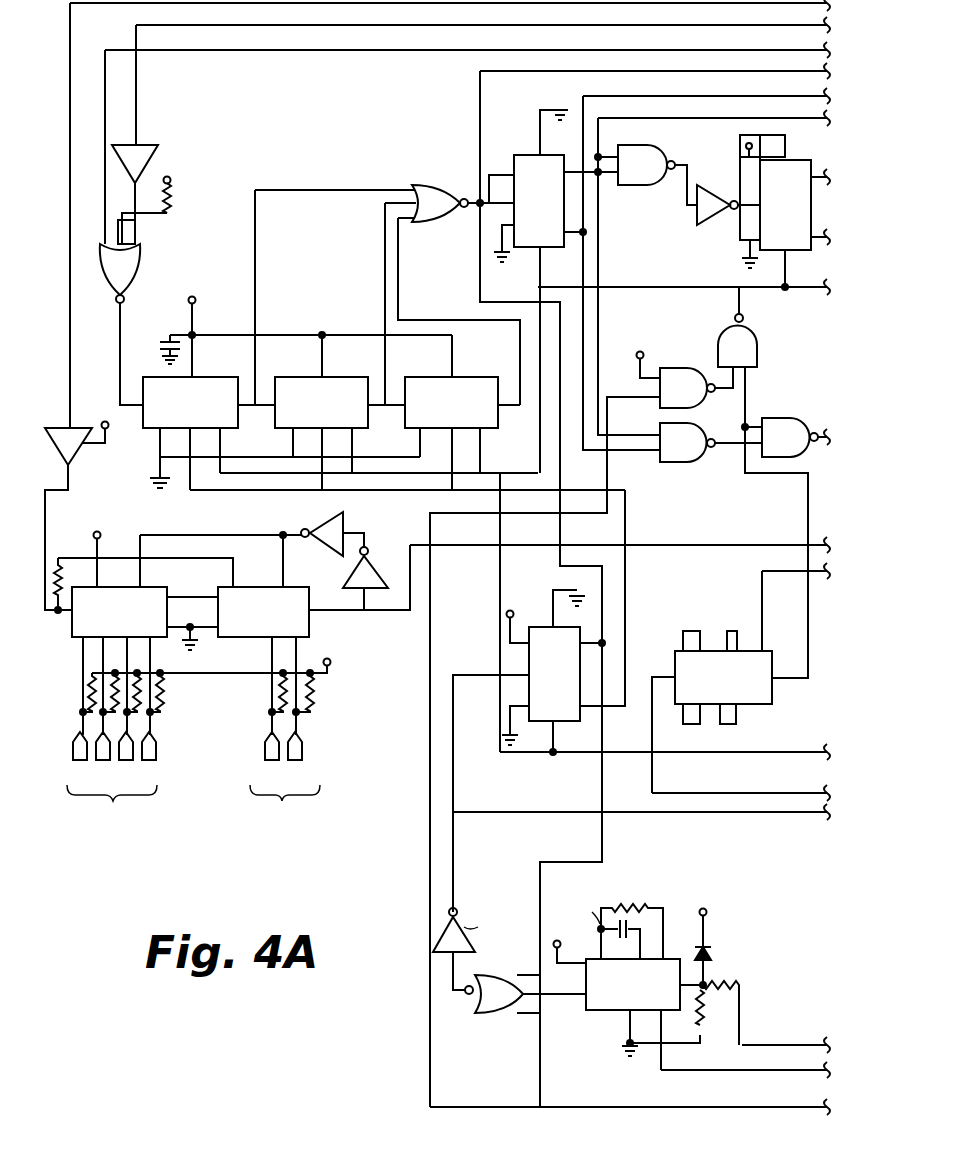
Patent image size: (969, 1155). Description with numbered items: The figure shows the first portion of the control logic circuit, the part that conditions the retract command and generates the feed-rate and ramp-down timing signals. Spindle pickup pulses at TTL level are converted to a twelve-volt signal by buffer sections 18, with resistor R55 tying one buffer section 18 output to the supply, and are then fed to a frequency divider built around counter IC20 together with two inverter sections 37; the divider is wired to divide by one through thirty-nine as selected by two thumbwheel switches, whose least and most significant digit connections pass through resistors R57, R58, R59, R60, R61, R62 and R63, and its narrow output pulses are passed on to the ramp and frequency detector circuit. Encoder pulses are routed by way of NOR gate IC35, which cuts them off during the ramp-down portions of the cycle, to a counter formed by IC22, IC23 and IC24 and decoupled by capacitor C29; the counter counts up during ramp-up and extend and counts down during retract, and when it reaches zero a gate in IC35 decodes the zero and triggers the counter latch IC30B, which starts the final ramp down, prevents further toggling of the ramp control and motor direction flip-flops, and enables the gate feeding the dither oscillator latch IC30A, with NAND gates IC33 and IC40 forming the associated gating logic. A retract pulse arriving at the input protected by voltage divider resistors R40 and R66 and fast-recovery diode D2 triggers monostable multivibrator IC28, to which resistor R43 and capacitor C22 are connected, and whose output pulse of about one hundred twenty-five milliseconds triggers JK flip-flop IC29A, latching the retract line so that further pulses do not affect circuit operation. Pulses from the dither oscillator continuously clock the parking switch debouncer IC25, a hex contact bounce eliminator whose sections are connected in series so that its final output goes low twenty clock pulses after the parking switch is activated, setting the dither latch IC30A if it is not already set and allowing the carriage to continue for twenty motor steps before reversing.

The IC18 buffer section 18 is at (128, 361).
The IC37 inverter section 37 is at (450, 584).
The frequency divider counter IC20 is at (197, 683).
The pulse counter IC22 is at (264, 412).
The pulse counter IC23 is at (320, 412).
The pulse counter IC24 is at (407, 543).
The parking switch debouncer IC25 is at (723, 682).
The monostable multivibrator IC28 is at (627, 968).
The JK flip-flop IC29A is at (539, 701).
The dither oscillator latch IC30A is at (783, 212).
The counter latch IC30B is at (553, 291).
The CD4011 NAND gate IC33 is at (711, 309).
The NOR gate IC35 is at (140, 236).
The CD4011 NAND gate IC40 is at (766, 332).
The resistor 10K R55 is at (166, 198).
The resistor 10K R57 is at (54, 573).
The resistor R58 is at (161, 710).
The resistor R59 is at (142, 692).
The resistor R60 is at (107, 706).
The resistor R61 is at (88, 700).
The resistor 47K R62 is at (312, 696).
The resistor R63 is at (280, 700).
The resistor 499K R43 is at (633, 884).
The resistor 10K R40 is at (730, 980).
The resistor 8.06K R66 is at (714, 1045).
The capacitor .1uf C22 is at (574, 896).
The capacitor C29 is at (291, 322).
The diode 1N4937 D2 is at (740, 916).